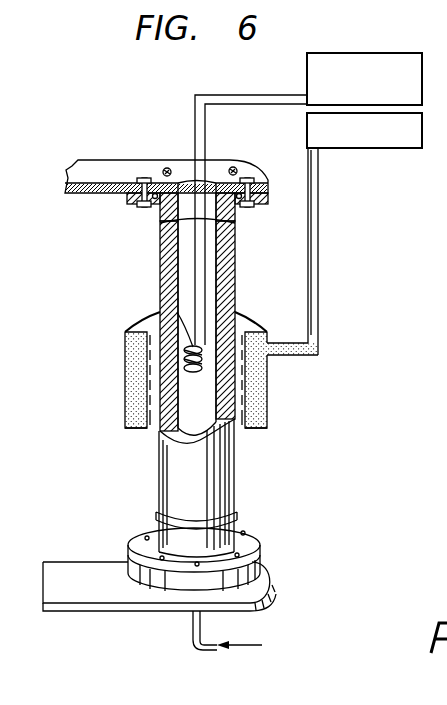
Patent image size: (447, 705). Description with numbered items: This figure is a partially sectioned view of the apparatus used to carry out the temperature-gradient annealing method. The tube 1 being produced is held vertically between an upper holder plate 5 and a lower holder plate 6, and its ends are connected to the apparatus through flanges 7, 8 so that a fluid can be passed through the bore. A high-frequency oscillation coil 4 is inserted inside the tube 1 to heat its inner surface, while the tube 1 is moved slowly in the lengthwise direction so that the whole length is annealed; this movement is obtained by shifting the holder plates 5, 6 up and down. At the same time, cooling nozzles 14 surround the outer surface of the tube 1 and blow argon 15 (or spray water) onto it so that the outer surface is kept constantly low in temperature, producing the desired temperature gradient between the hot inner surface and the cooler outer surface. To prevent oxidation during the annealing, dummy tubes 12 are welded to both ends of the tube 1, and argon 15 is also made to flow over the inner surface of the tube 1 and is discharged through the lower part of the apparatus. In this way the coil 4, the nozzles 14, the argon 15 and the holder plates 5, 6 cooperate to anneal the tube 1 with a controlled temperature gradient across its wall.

The tube 1 is at (165, 272).
The high-frequency oscillation coil 4 is at (160, 313).
The upper holder plate 5 is at (100, 168).
The lower holder plate 6 is at (107, 584).
The flange 7 is at (132, 206).
The flange 8 is at (135, 546).
The dummy tube 12 is at (230, 216).
The cooling nozzle 14 is at (140, 430).
The argon 15 is at (240, 647).